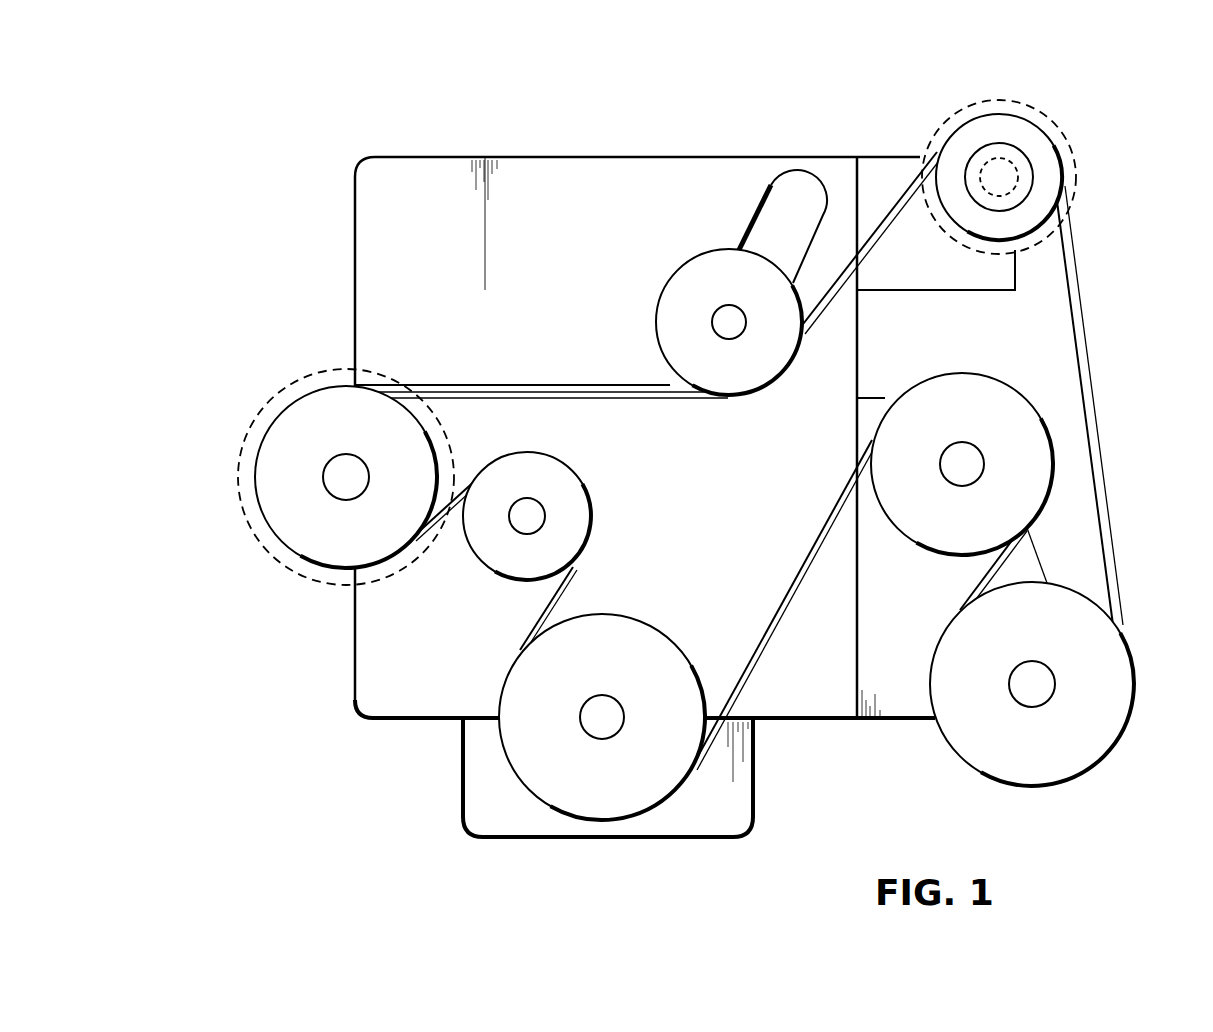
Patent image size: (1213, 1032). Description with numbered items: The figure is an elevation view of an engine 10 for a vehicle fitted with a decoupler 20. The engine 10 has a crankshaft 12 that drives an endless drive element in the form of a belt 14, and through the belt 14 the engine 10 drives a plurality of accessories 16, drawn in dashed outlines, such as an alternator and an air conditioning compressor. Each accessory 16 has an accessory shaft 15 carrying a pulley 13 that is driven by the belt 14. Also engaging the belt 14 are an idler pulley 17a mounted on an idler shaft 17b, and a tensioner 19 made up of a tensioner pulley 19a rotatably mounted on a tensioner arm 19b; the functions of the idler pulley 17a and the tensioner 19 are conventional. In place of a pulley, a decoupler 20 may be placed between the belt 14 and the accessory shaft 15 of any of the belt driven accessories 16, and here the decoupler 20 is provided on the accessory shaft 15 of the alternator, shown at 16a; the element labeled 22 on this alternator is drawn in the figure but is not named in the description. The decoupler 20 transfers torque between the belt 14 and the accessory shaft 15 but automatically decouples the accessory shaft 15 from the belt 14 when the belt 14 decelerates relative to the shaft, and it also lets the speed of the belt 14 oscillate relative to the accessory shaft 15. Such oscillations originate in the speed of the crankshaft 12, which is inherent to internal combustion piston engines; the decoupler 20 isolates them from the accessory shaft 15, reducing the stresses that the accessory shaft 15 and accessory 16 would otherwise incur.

The engine 10 is at (320, 112).
The crankshaft 12 is at (602, 722).
The pulley 13 is at (258, 503).
The belt 14 is at (753, 663).
The accessory shaft 15 is at (337, 477).
The accessories 16 is at (683, 334).
The alternator 16a is at (1056, 167).
The idler pulley 17a is at (428, 599).
The idler shaft 17b is at (517, 515).
The tensioner 19 is at (674, 225).
The tensioner pulley 19a is at (682, 277).
The tensioner arm 19b is at (770, 228).
The decoupler 20 is at (1020, 163).
The accessory pulley 22 is at (1038, 209).